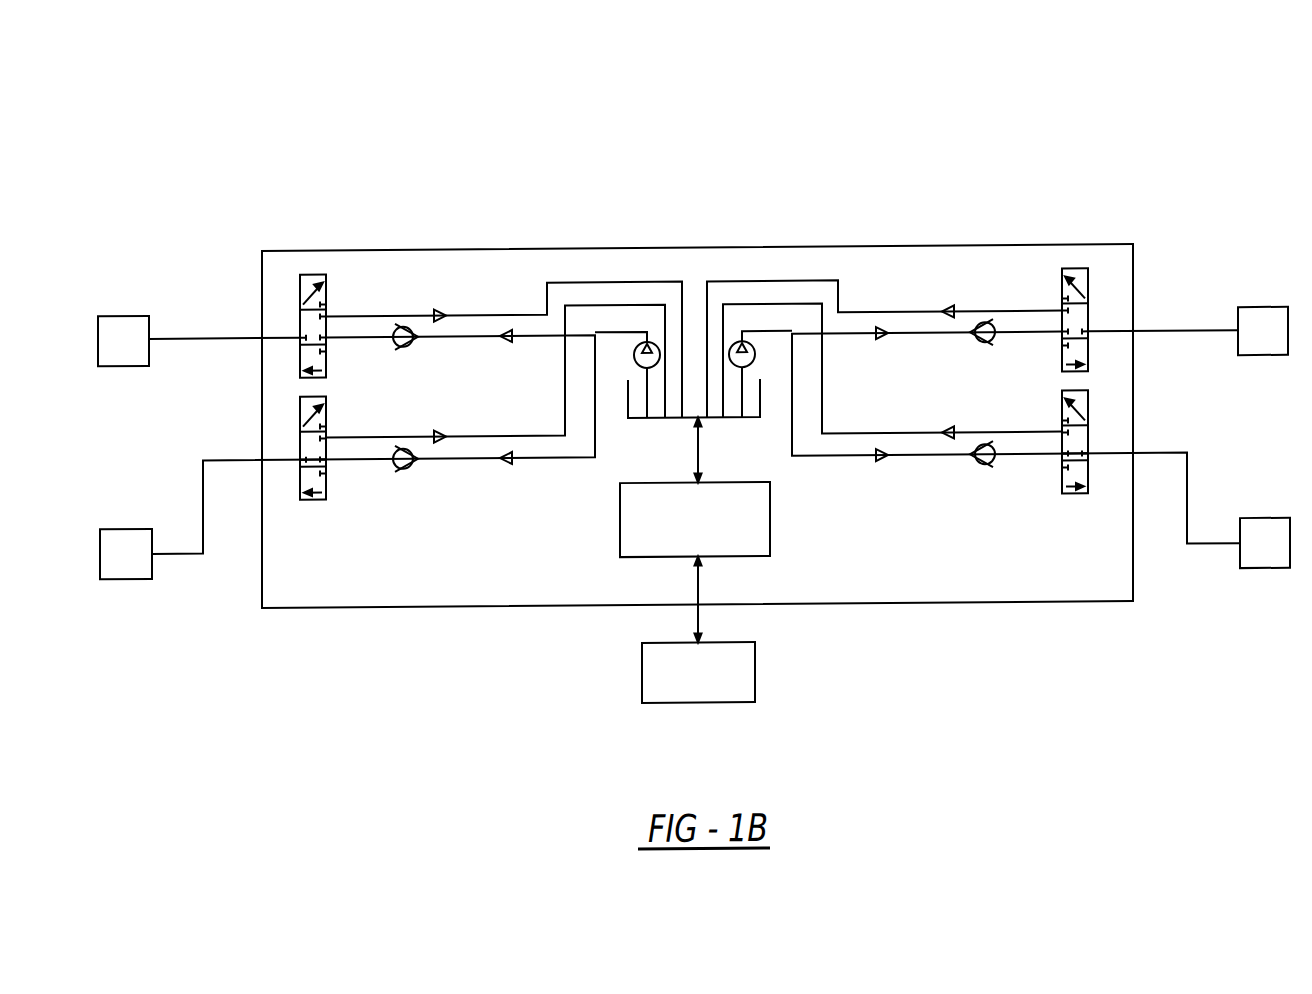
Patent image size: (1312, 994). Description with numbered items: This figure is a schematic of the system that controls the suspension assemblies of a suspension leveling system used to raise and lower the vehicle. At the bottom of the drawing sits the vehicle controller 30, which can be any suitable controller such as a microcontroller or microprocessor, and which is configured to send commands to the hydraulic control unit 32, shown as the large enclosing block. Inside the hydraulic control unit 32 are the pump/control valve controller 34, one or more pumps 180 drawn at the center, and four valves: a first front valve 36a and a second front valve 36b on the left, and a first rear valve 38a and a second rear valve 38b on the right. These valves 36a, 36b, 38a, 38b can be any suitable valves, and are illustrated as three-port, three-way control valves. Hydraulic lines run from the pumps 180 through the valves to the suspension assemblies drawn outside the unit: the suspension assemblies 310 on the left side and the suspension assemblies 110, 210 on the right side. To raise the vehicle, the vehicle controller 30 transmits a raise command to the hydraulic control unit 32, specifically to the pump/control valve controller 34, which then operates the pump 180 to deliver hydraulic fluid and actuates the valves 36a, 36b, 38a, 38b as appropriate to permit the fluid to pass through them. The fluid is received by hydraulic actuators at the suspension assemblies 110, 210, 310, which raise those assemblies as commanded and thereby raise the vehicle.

The vehicle controller 30 is at (675, 706).
The hydraulic control unit 32 is at (695, 251).
The pump/control valve controller 34 is at (620, 508).
The first front valve 36a is at (312, 275).
The second front valve 36b is at (316, 500).
The first rear valve 38a is at (1075, 275).
The second rear valve 38b is at (1075, 500).
The pump 180 is at (750, 421).
The suspension assembly 310 is at (128, 315).
The suspension assembly 110 is at (1251, 396).
The suspension assembly 210 is at (1262, 315).